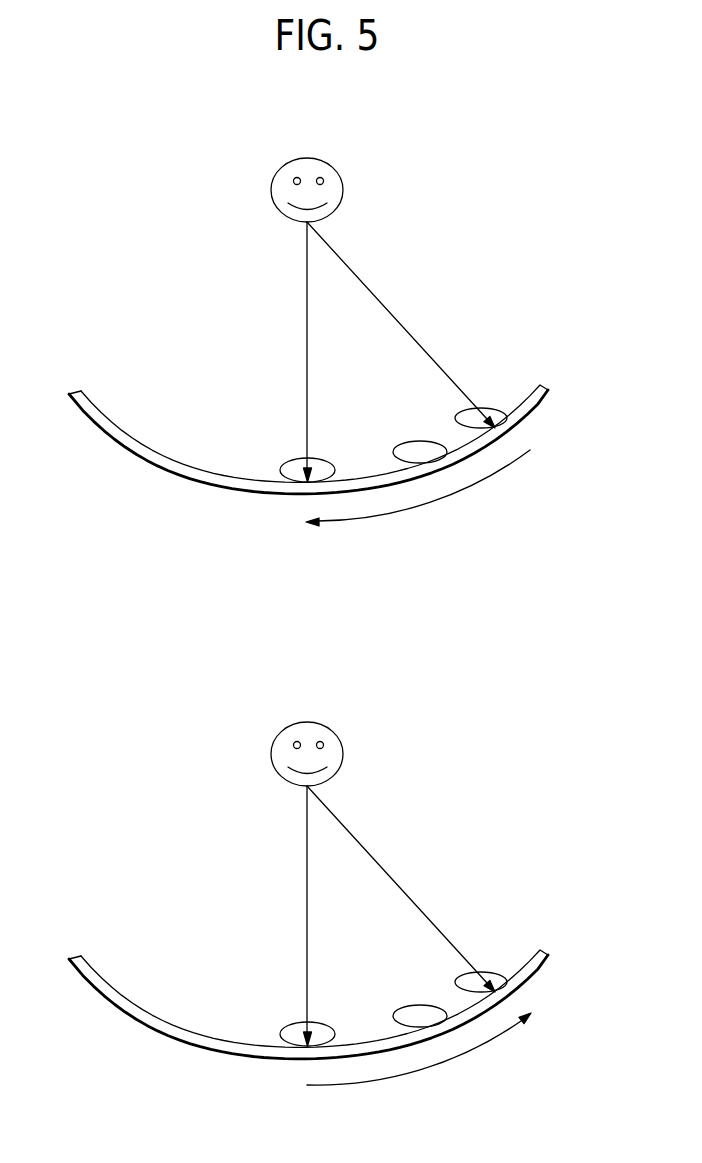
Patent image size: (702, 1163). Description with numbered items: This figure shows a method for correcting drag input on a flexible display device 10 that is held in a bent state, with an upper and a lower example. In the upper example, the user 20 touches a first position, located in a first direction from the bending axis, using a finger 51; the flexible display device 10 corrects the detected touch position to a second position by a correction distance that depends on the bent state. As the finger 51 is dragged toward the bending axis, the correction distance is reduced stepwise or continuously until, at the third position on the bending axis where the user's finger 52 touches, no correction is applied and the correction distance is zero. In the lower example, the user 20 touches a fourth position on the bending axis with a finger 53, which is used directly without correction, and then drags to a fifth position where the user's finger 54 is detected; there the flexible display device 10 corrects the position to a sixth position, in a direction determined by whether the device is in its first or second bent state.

The flexible display device 10 is at (542, 386).
The user 20 is at (338, 165).
The finger 51 is at (486, 409).
The finger 52 is at (288, 461).
The finger 53 is at (292, 996).
The finger 54 is at (484, 945).